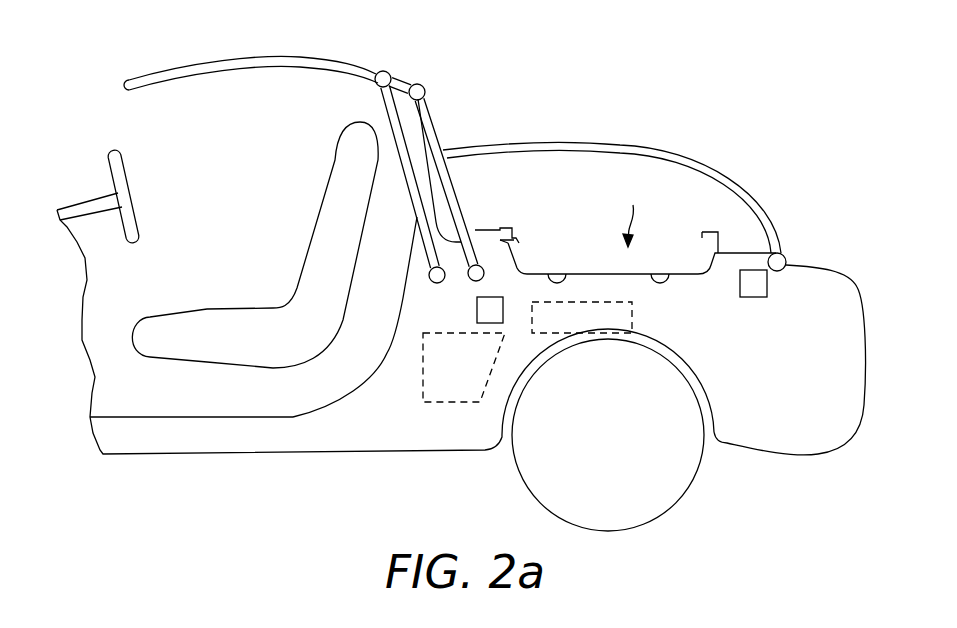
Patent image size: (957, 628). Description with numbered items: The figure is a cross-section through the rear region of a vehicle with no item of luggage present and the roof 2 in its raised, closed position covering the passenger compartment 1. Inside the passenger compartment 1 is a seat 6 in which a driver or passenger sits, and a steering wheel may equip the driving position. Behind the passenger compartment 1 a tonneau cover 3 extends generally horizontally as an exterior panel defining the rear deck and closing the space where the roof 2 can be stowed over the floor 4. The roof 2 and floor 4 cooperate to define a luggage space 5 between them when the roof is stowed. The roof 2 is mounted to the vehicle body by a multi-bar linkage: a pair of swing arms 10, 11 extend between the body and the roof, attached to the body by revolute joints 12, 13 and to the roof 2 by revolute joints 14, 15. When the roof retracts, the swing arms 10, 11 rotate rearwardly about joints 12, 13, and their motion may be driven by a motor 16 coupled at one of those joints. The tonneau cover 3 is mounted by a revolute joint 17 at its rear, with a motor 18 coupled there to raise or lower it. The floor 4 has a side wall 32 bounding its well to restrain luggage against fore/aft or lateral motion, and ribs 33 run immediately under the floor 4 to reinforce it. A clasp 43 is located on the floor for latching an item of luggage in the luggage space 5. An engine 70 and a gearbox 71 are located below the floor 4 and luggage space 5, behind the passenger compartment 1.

The passenger compartment 1 is at (237, 168).
The roof 2 is at (200, 67).
The tonneau cover 3 is at (690, 158).
The floor 4 is at (596, 272).
The luggage space 5 is at (632, 212).
The seat 6 is at (216, 317).
The swing arm 10 is at (388, 110).
The swing arm 11 is at (438, 140).
The revolute joint 12 is at (429, 274).
The revolute joint 13 is at (469, 282).
The revolute joint 14 is at (385, 71).
The revolute joint 15 is at (422, 84).
The motor 16 is at (488, 323).
The revolute joint 17 is at (786, 256).
The motor 18 is at (755, 297).
The side wall 32 is at (520, 264).
The rib 33 is at (554, 283).
The clasp 43 is at (512, 228).
The engine 70 is at (447, 392).
The gearbox 71 is at (616, 328).